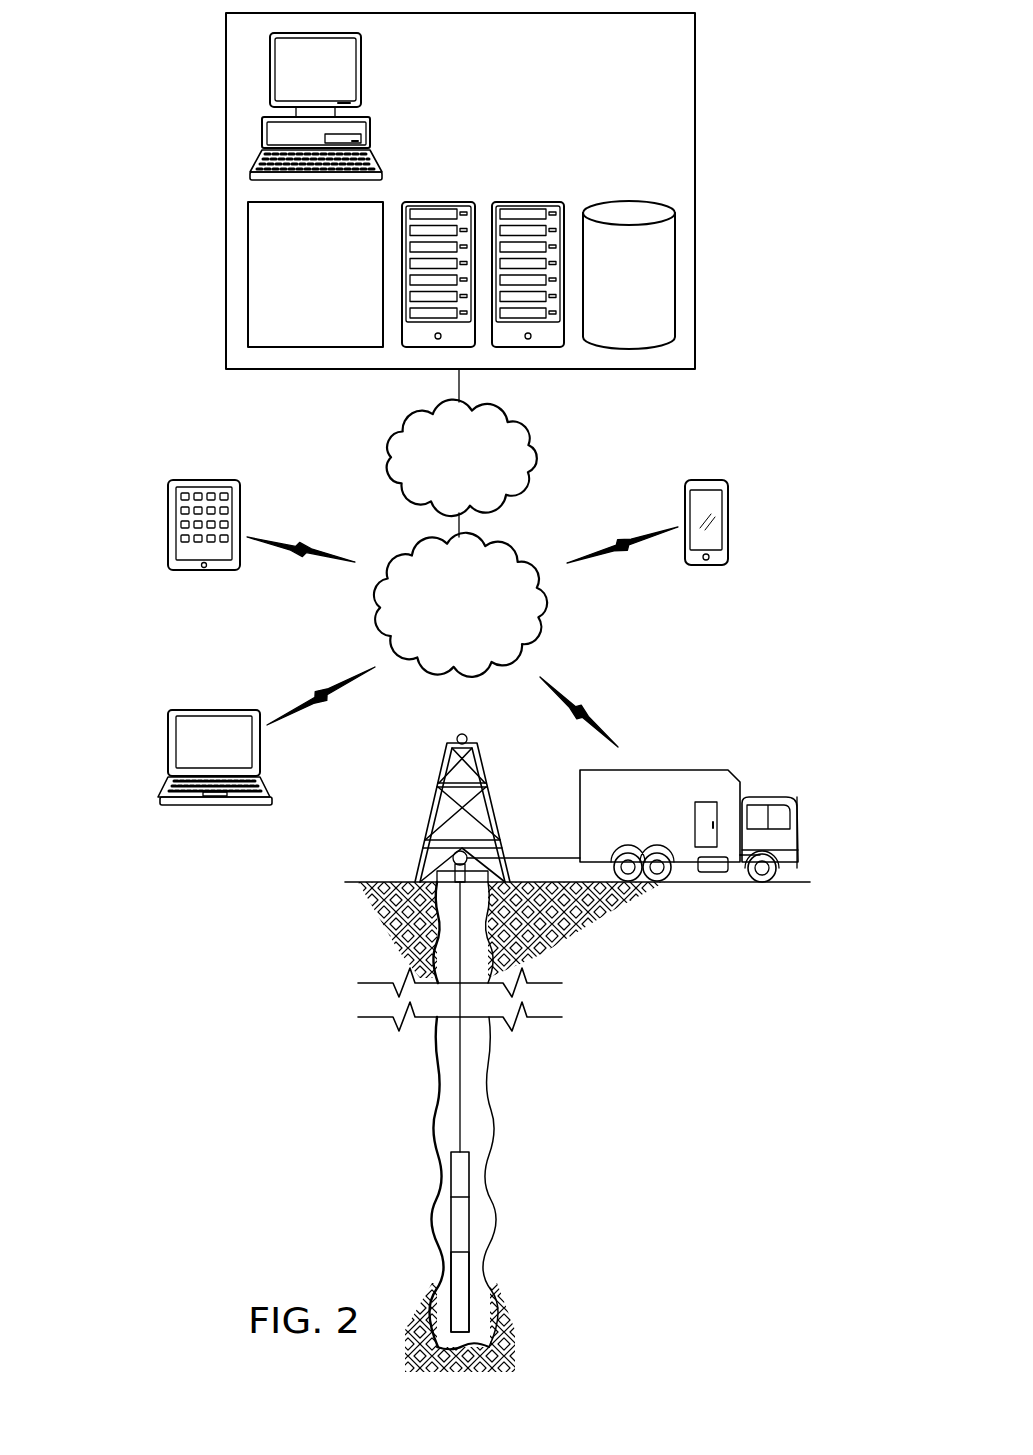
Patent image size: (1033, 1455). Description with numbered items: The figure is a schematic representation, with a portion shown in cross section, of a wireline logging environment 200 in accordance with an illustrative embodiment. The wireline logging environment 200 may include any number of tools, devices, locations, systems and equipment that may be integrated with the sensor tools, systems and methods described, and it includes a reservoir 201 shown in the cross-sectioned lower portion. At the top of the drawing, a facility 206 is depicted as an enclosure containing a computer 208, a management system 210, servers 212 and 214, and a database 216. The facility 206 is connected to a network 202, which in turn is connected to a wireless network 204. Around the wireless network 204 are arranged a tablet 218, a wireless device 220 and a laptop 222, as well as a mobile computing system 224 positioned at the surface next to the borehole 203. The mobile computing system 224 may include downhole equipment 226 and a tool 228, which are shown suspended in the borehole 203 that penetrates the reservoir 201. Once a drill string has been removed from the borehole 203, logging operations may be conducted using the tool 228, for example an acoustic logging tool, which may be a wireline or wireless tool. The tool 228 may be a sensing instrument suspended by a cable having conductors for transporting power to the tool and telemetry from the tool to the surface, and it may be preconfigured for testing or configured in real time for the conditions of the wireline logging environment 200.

The wireline logging environment 200 is at (183, 57).
The reservoir 201 is at (639, 957).
The network 202 is at (386, 459).
The borehole 203 is at (491, 1078).
The wireless network 204 is at (404, 660).
The facility 206 is at (506, 96).
The computer 208 is at (293, 84).
The management system 210 is at (294, 287).
The server 212 is at (438, 202).
The server 214 is at (528, 202).
The database 216 is at (607, 287).
The tablet 218 is at (168, 523).
The wireless device 220 is at (728, 522).
The laptop 222 is at (168, 742).
The mobile computing system 224 is at (700, 770).
The downhole equipment 226 is at (447, 1163).
The tool 228 is at (462, 1300).